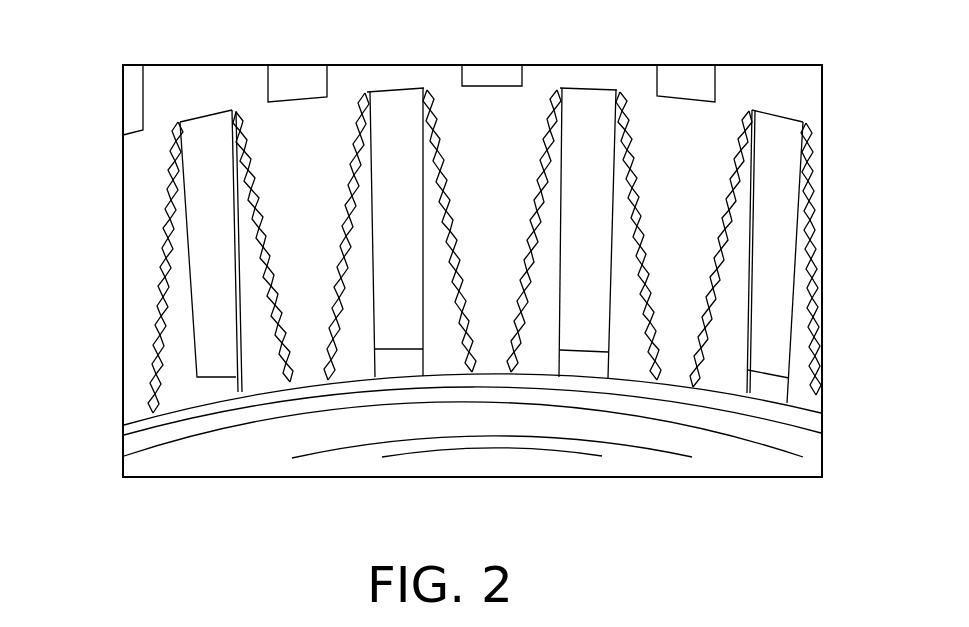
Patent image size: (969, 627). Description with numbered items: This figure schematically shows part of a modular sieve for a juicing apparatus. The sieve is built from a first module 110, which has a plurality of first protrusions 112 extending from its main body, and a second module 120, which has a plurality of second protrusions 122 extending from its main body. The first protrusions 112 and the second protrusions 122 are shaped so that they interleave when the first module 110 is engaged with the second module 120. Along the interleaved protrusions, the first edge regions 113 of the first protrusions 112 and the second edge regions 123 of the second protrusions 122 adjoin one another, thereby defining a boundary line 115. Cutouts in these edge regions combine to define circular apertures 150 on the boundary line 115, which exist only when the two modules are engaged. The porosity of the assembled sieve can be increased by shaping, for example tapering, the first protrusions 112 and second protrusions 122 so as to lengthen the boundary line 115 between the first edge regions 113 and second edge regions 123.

The first module 110 is at (428, 435).
The first protrusions 112 is at (385, 92).
The first edge regions 113 is at (176, 158).
The boundary line 115 is at (157, 382).
The second module 120 is at (247, 92).
The second protrusions 122 is at (530, 93).
The second edge regions 123 is at (157, 300).
The circular apertures 150 is at (427, 93).